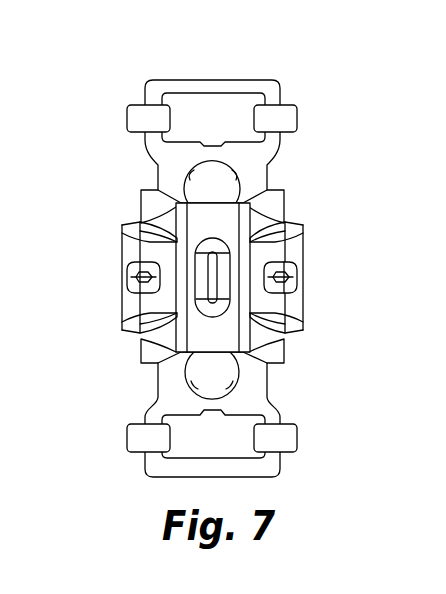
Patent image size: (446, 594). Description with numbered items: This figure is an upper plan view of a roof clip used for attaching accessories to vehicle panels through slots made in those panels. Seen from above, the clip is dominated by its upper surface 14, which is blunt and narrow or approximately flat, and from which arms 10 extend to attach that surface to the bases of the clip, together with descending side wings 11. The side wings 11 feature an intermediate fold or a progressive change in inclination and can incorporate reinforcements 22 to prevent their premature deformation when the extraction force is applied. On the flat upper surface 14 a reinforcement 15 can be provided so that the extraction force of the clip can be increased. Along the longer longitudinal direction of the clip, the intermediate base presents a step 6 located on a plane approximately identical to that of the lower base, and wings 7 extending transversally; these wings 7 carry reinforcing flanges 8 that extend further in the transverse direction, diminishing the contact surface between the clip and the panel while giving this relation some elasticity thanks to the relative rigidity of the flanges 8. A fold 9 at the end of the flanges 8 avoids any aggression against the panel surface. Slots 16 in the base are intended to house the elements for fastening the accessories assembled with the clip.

The step 6 is at (170, 373).
The wings 7 is at (238, 88).
The reinforcing flanges 8 is at (143, 113).
The fold 9 is at (295, 427).
The arms 10 is at (263, 205).
The side wings 11 is at (268, 253).
The upper surface 14 is at (200, 335).
The reinforcement 15 is at (202, 272).
The slots 16 is at (215, 358).
The reinforcements 22 is at (303, 275).